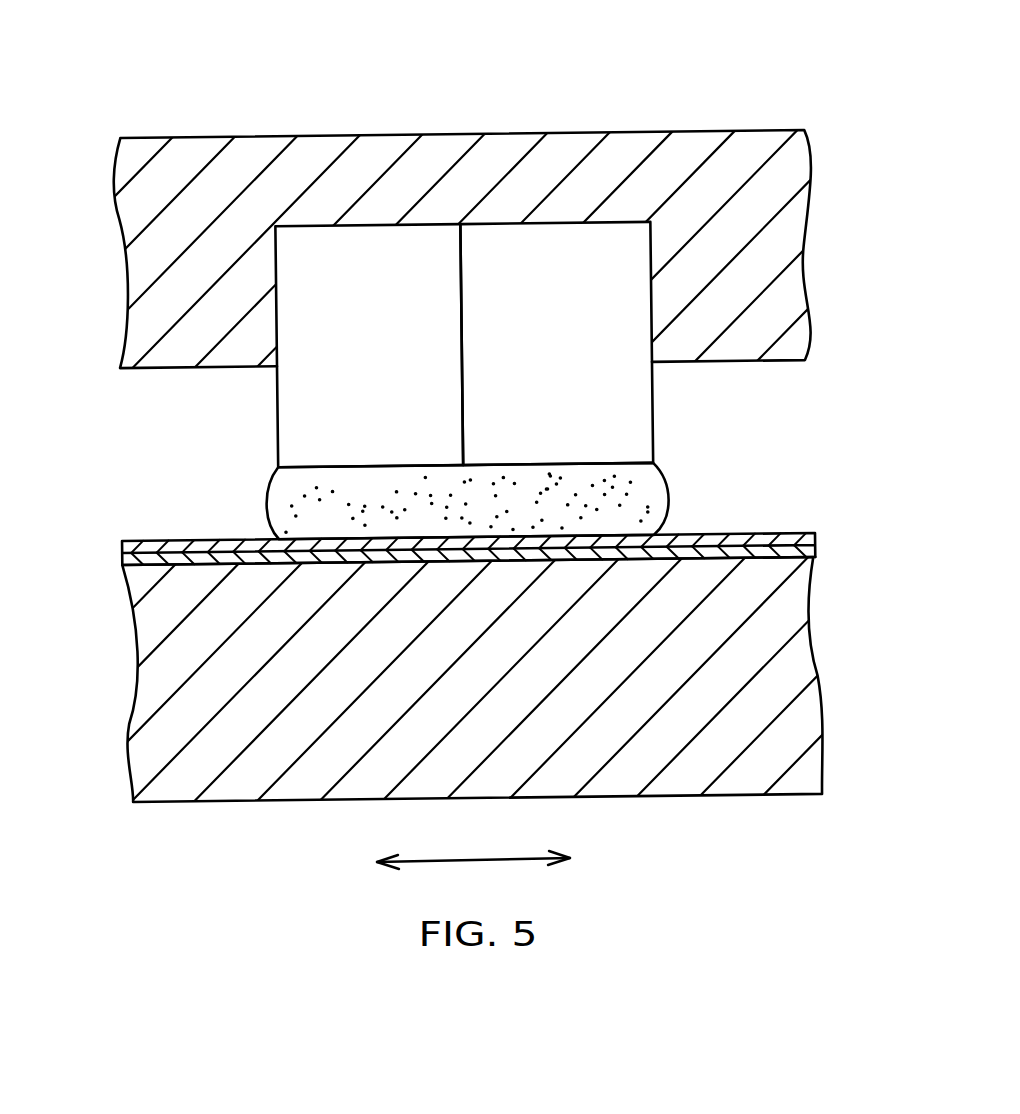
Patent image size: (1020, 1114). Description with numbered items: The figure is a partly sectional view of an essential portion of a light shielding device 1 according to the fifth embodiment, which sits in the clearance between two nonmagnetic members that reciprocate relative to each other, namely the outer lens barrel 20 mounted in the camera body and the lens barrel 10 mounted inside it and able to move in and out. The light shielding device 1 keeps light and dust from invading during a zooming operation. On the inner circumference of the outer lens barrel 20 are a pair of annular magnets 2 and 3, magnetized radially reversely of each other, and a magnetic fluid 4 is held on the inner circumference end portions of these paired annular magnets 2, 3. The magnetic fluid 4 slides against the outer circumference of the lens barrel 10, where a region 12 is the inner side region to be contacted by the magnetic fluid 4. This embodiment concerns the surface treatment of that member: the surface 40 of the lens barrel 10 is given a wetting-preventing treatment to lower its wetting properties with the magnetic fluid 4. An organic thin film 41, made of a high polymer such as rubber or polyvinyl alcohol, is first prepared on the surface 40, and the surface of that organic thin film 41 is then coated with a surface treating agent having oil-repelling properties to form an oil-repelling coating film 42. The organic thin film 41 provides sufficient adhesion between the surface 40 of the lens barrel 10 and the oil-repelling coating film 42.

The light shielding device 1 is at (510, 271).
The annular magnet 2 is at (326, 236).
The annular magnet 3 is at (624, 247).
The magnetic fluid 4 is at (650, 494).
The lens barrel 10 is at (788, 666).
The region 12 is at (454, 499).
The outer lens barrel 20 is at (766, 143).
The surface 40 is at (438, 499).
The organic thin film 41 is at (194, 552).
The oil-repelling coating film 42 is at (232, 539).